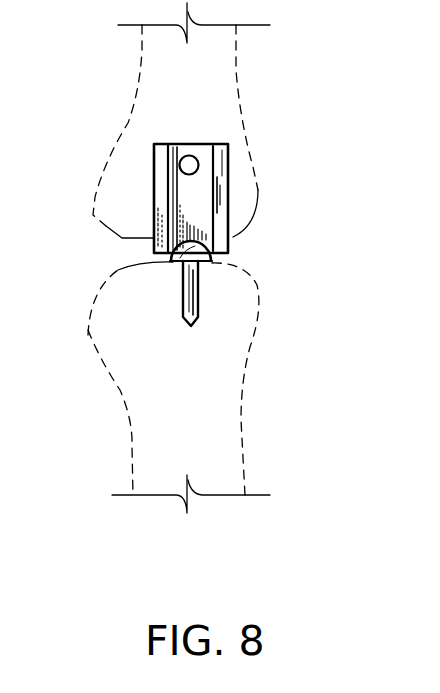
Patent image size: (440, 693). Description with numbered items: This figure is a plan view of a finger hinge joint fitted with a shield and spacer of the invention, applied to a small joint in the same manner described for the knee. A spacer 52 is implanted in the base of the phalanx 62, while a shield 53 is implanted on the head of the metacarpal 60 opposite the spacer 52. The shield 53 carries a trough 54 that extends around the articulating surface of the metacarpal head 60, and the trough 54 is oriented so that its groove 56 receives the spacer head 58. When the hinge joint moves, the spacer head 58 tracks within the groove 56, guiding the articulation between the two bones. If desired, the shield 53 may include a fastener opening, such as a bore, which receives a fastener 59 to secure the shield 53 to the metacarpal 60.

The spacer 52 is at (199, 265).
The shield 53 is at (163, 200).
The trough 54 is at (223, 163).
The groove 56 is at (196, 203).
The spacer head 58 is at (211, 268).
The fastener 59 is at (180, 167).
The metacarpal 60 is at (172, 80).
The phalanx 62 is at (208, 385).